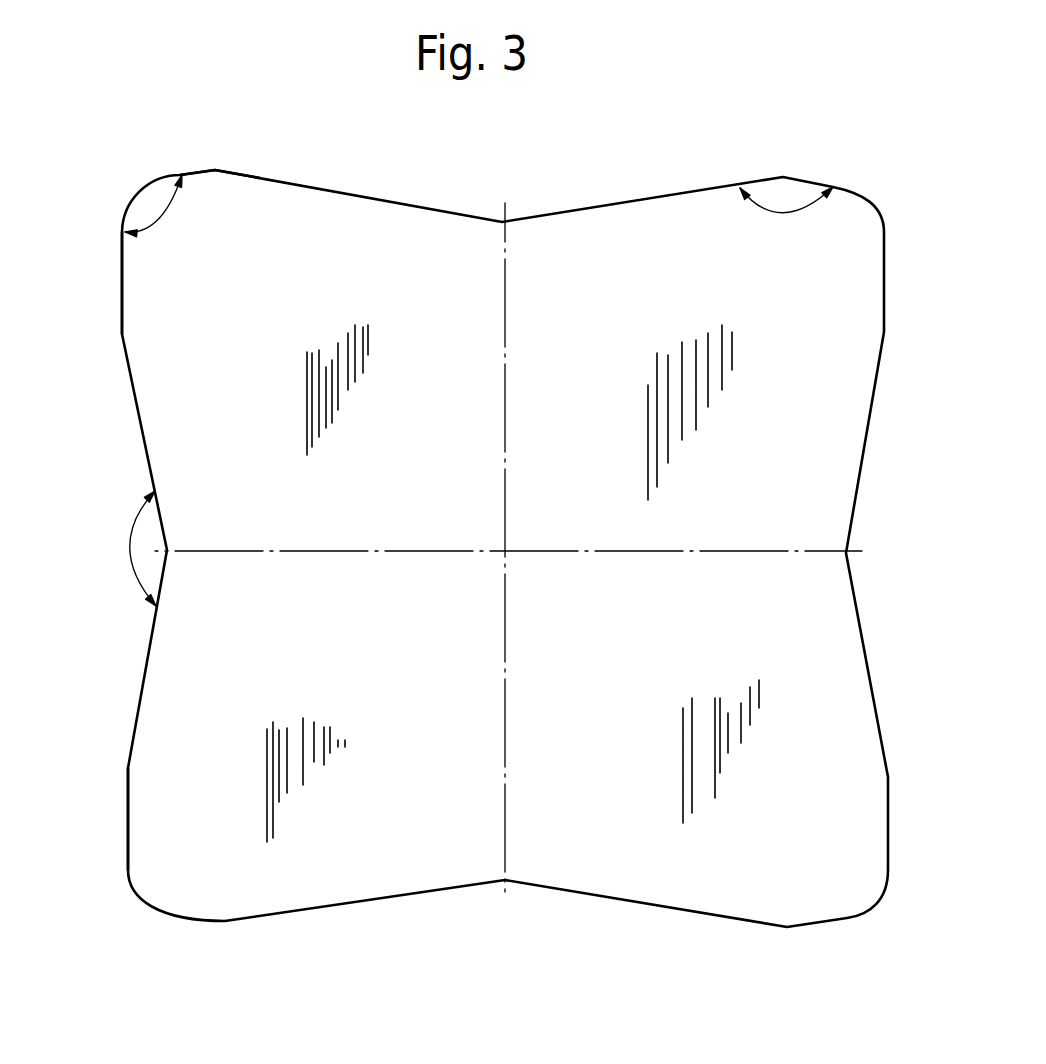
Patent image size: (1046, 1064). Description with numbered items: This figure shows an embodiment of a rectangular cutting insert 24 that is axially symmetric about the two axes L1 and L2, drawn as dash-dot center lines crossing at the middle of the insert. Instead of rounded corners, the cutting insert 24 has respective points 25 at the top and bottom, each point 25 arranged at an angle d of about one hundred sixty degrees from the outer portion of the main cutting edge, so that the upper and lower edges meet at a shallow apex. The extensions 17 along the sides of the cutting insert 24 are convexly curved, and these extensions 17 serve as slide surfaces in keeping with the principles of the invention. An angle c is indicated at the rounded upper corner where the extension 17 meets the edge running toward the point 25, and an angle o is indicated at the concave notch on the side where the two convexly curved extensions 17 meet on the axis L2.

The extension 17 is at (122, 273).
The cutting insert 24 is at (817, 708).
The point 25 is at (218, 160).
The axis L1 is at (508, 750).
The axis L2 is at (327, 553).
The corner angle c is at (170, 212).
The angle d is at (783, 215).
The side notch angle o is at (128, 547).